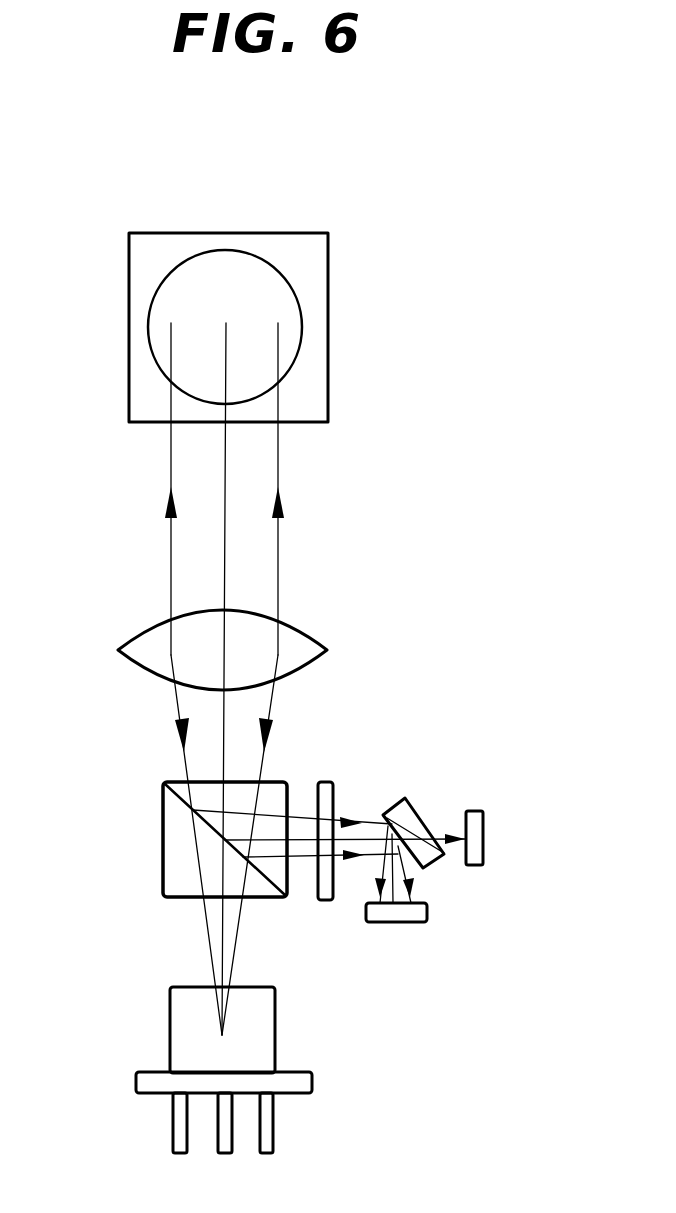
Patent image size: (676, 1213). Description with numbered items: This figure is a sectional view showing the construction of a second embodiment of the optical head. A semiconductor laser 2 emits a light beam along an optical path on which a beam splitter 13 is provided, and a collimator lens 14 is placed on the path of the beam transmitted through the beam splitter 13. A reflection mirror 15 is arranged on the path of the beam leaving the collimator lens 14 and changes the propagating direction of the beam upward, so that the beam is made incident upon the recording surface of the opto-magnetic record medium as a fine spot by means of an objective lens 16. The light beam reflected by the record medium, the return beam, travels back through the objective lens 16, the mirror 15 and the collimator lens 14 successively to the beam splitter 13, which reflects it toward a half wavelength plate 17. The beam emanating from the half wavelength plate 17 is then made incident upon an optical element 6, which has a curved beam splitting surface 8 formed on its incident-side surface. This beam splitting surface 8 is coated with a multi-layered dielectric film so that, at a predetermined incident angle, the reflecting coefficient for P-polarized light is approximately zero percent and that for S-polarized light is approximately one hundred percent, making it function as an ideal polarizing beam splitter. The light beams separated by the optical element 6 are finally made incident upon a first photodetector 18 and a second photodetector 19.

The semiconductor laser 2 is at (276, 1027).
The optical element 6 is at (412, 800).
The curved beam splitting surface 8 is at (422, 870).
The beam splitter 13 is at (163, 848).
The collimator lens 14 is at (303, 628).
The reflection mirror 15 is at (328, 270).
The objective lens 16 is at (302, 328).
The half wavelength plate 17 is at (331, 780).
The first photodetector 18 is at (487, 812).
The second photodetector 19 is at (400, 923).